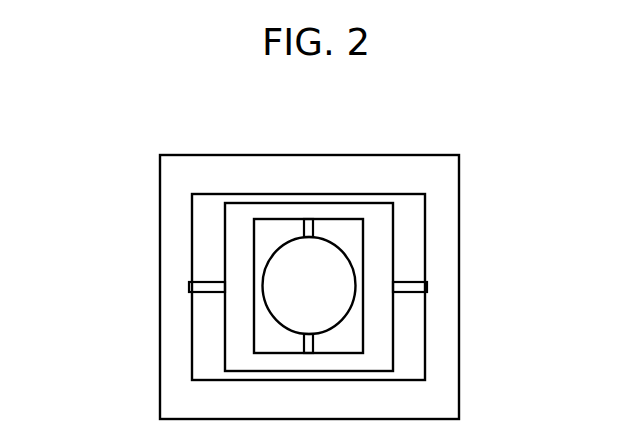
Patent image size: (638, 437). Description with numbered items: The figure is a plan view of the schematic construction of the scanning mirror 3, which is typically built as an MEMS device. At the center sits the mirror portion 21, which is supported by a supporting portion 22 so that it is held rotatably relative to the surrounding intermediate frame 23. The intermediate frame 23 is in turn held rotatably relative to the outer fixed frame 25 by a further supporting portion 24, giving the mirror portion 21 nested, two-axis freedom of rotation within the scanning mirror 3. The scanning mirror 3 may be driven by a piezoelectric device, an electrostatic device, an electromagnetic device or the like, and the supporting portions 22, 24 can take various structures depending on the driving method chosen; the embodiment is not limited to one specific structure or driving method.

The scanning mirror 3 is at (160, 374).
The mirror portion 21 is at (283, 273).
The supporting portion 22 is at (315, 229).
The intermediate frame 23 is at (376, 220).
The supporting portion 24 is at (403, 281).
The fixed frame 25 is at (182, 175).